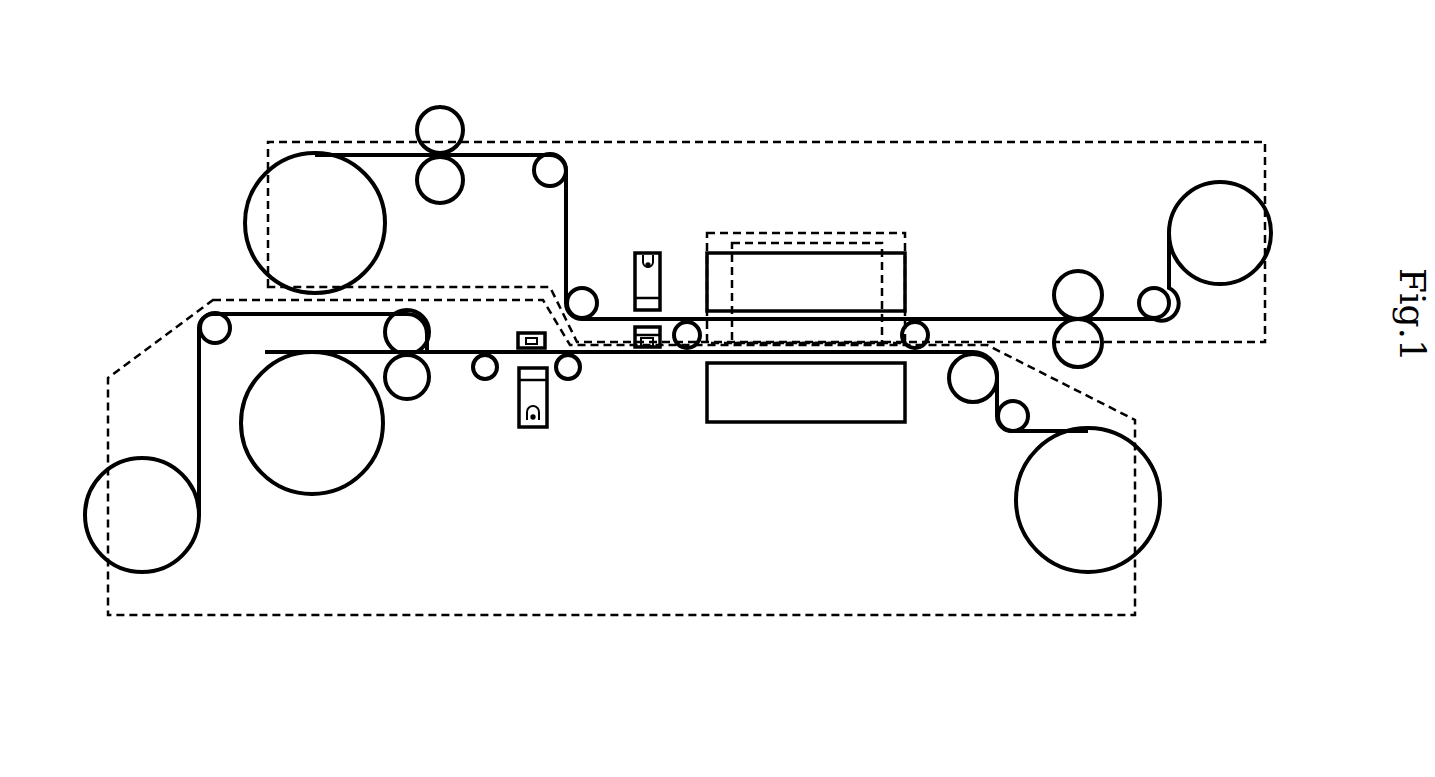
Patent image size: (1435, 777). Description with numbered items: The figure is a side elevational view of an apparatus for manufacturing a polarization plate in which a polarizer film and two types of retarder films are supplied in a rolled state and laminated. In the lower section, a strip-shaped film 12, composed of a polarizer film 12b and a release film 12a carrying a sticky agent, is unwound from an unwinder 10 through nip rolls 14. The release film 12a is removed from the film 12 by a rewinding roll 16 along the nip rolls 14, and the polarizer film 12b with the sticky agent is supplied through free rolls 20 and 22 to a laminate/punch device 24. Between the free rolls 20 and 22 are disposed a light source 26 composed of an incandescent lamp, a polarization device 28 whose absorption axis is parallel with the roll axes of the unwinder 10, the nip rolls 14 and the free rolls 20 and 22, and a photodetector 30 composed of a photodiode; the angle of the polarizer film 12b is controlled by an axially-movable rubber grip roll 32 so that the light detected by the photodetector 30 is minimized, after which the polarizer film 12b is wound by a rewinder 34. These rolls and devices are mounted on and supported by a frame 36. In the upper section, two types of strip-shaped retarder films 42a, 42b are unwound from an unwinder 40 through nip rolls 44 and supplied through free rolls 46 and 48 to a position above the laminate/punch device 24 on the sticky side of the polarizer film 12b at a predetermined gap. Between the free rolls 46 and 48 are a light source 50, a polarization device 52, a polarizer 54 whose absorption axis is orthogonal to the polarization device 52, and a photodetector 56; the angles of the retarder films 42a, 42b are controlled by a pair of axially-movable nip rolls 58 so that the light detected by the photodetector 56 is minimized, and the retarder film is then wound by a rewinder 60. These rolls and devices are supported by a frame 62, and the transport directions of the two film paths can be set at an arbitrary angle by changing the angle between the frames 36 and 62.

The unwinder 10 is at (333, 480).
The strip-shaped film 12 is at (643, 421).
The release film 12a is at (199, 468).
The polarizer film 12b is at (441, 360).
The nip rolls 14 is at (418, 338).
The rewinding roll 16 is at (170, 546).
The free roll 20 is at (485, 380).
The free roll 22 is at (571, 378).
The laminate/punch device 24 is at (794, 428).
The light source 26 is at (522, 428).
The polarization device 28 is at (537, 400).
The photodetector 30 is at (525, 333).
The rubber grip roll 32 is at (965, 388).
The rewinder 34 is at (1035, 525).
The frame 36 is at (553, 622).
The unwinder 40 is at (308, 172).
The retarder film 42a is at (533, 152).
The retarder film 42b is at (473, 105).
The nip rolls 44 is at (440, 122).
The free roll 46 is at (578, 296).
The free roll 48 is at (687, 322).
The light source 50 is at (648, 253).
The polarization device 52 is at (636, 282).
The polarizer 54 is at (650, 347).
The photodetector 56 is at (660, 338).
The nip rolls 58 is at (1080, 292).
The rewinder 60 is at (1193, 215).
The frame 62 is at (776, 140).